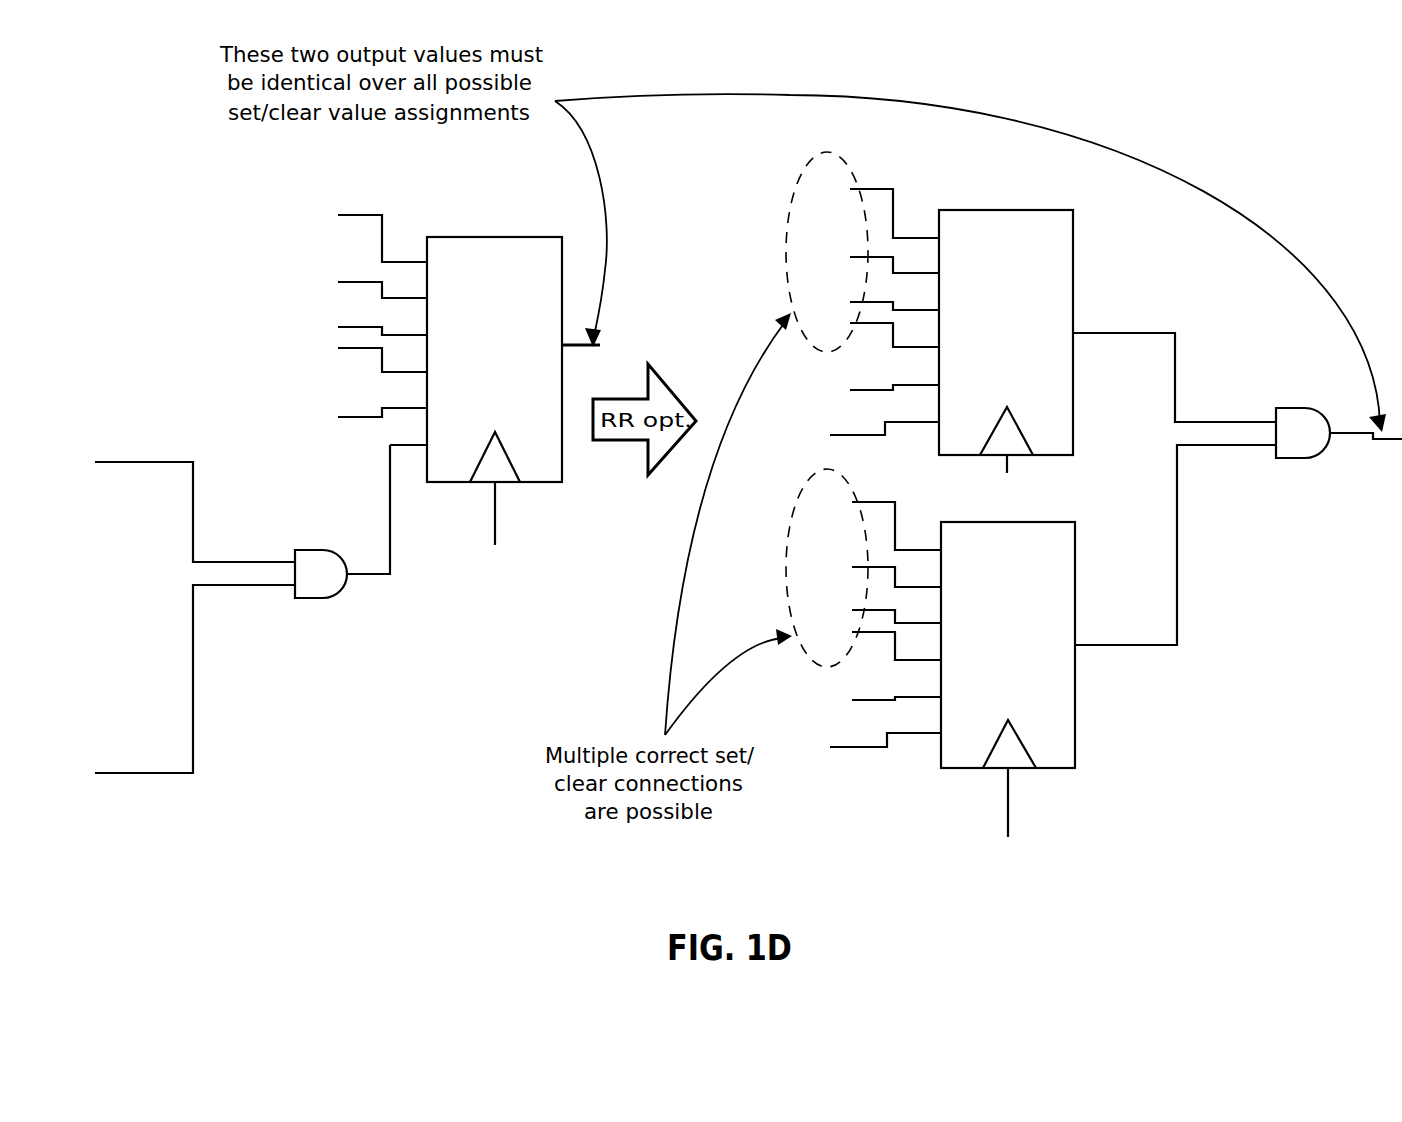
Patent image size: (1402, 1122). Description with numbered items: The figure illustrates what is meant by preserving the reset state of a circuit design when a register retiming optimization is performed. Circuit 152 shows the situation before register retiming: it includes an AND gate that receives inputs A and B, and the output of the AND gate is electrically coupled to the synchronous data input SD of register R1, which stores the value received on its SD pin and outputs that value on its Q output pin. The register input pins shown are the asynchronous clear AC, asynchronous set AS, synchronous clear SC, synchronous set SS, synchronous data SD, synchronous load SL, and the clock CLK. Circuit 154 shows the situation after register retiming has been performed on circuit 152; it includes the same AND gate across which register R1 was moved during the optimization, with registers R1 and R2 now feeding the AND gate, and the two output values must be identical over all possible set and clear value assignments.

The circuit 152 is at (329, 523).
The circuit 154 is at (1094, 506).
The register R1 is at (494, 406).
The register R2 is at (1008, 691).